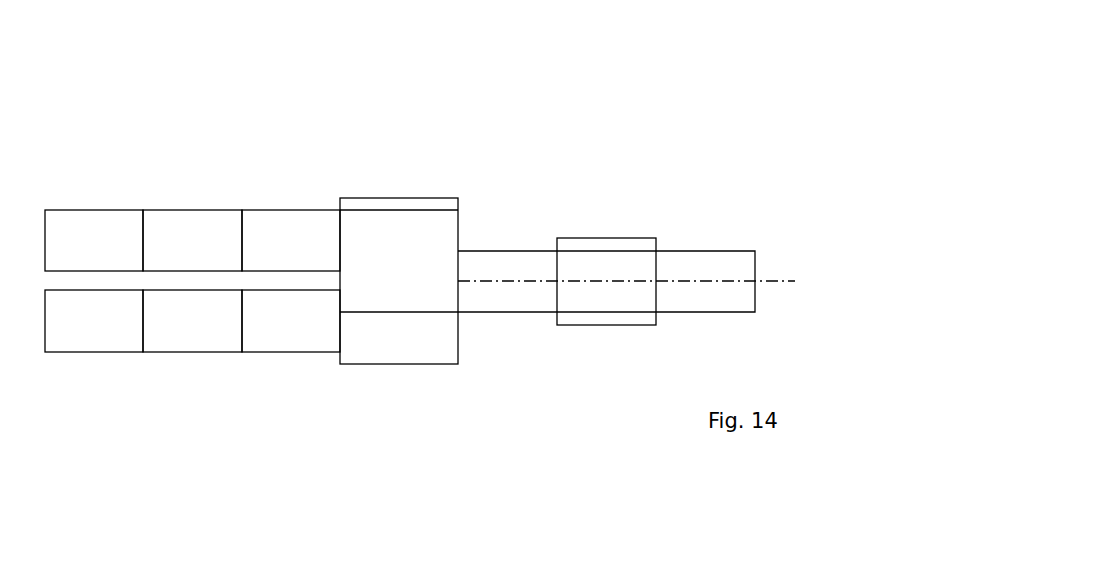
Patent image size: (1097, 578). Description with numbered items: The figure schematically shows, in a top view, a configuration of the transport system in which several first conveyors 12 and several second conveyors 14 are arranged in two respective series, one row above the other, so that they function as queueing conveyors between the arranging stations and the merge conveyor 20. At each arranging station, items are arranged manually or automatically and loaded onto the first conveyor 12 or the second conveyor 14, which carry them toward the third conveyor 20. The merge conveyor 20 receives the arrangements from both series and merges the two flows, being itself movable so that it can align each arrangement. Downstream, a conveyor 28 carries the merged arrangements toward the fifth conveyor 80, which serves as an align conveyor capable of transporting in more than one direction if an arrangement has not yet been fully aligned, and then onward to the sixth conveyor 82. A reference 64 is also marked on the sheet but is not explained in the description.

The first conveyor 12 is at (102, 242).
The second conveyor 14 is at (110, 326).
The third conveyor 20 is at (373, 242).
The conveyor 28 is at (507, 258).
The drive arrangement 64 is at (626, 143).
The fifth conveyor 80 is at (622, 243).
The sixth conveyor 82 is at (703, 258).